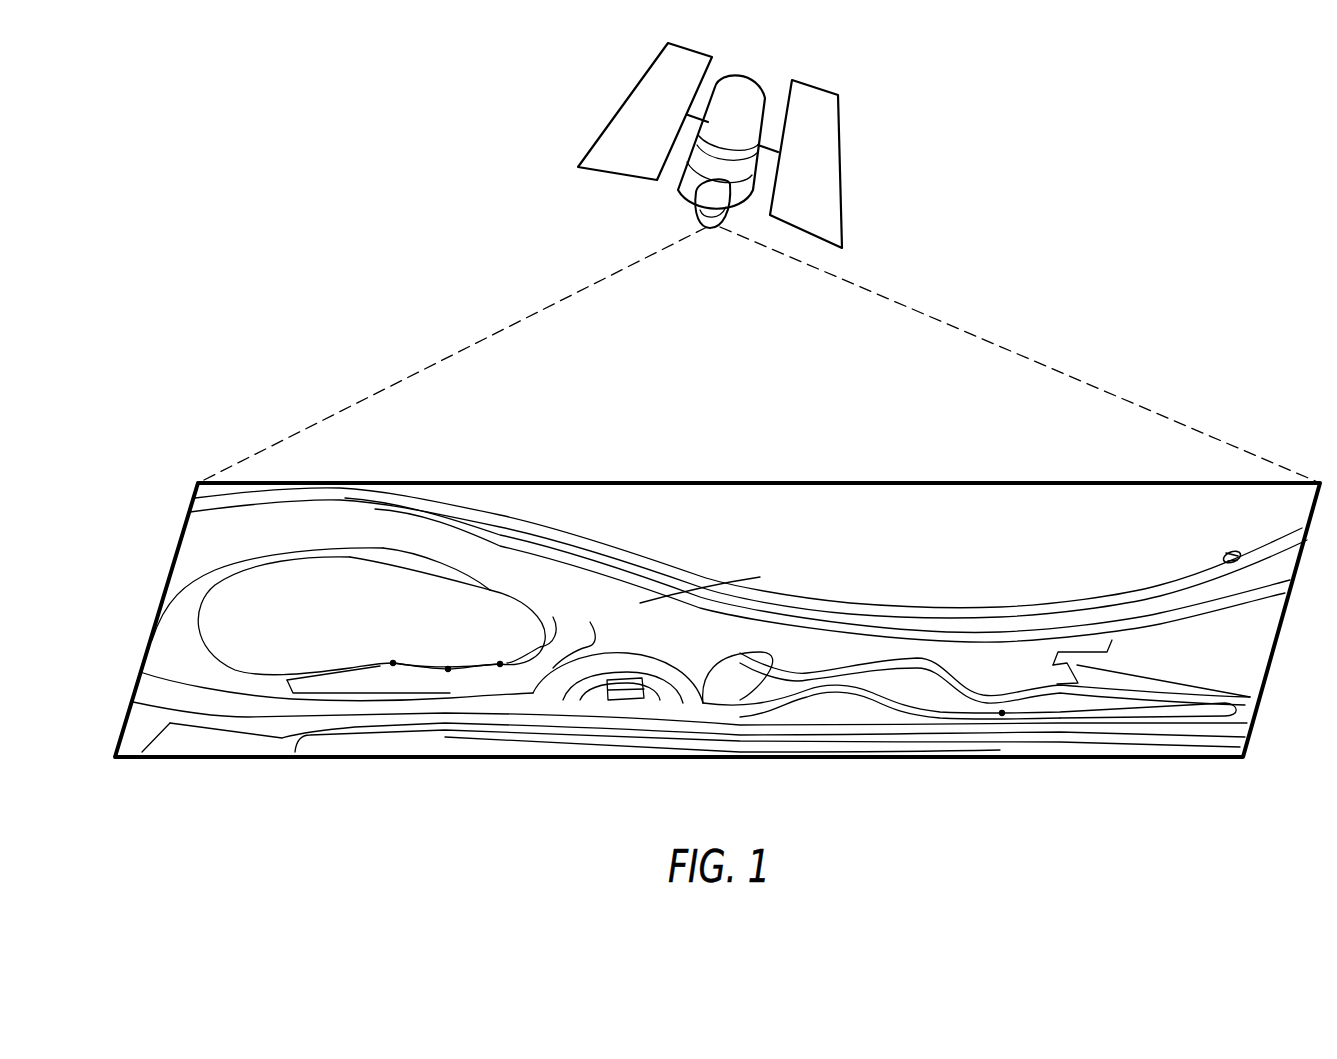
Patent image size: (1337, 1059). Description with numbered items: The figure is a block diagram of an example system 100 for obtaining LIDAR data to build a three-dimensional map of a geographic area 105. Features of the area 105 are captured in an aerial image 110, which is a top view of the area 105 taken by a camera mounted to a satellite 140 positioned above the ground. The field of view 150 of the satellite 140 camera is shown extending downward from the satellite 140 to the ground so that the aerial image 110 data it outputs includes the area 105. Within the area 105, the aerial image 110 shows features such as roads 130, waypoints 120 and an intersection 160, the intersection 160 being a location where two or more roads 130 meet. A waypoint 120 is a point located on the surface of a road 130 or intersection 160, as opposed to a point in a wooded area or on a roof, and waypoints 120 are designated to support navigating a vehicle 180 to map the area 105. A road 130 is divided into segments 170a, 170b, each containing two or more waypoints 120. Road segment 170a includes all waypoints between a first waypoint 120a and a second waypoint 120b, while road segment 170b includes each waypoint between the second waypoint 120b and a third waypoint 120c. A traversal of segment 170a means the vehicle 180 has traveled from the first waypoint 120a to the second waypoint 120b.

The system 100 is at (1210, 166).
The geographic area 105 is at (923, 483).
The aerial image 110 is at (785, 508).
The waypoint 120 is at (1002, 716).
The first waypoint 120a is at (500, 667).
The second waypoint 120b is at (448, 672).
The third waypoint 120c is at (393, 666).
The road 130 is at (858, 670).
The satellite 140 is at (845, 176).
The field of view 150 is at (452, 351).
The intersection 160 is at (540, 610).
The road segment 170a is at (467, 662).
The road segment 170b is at (417, 662).
The vehicle 180 is at (1230, 550).